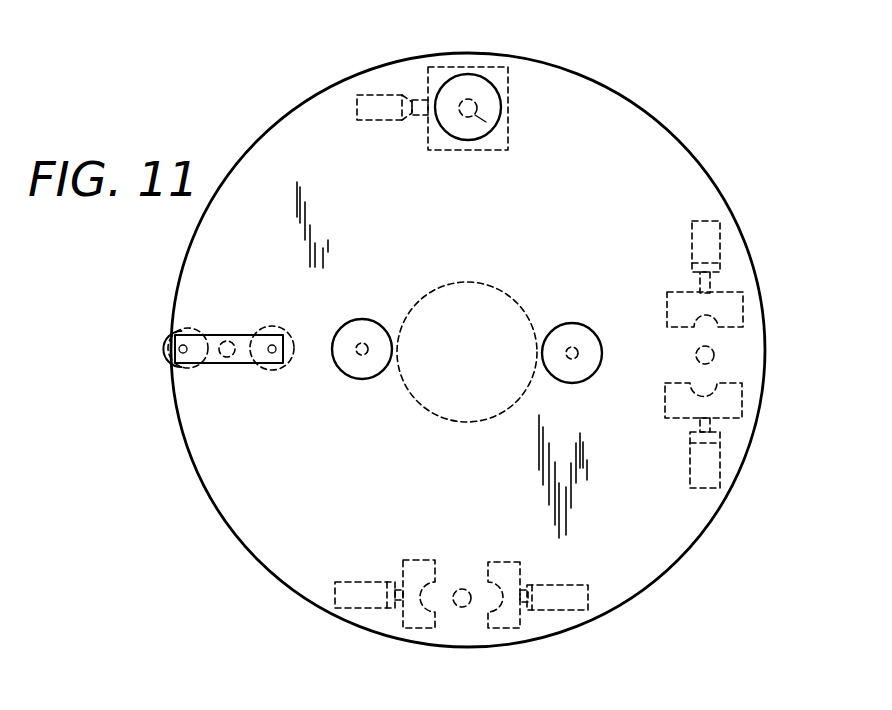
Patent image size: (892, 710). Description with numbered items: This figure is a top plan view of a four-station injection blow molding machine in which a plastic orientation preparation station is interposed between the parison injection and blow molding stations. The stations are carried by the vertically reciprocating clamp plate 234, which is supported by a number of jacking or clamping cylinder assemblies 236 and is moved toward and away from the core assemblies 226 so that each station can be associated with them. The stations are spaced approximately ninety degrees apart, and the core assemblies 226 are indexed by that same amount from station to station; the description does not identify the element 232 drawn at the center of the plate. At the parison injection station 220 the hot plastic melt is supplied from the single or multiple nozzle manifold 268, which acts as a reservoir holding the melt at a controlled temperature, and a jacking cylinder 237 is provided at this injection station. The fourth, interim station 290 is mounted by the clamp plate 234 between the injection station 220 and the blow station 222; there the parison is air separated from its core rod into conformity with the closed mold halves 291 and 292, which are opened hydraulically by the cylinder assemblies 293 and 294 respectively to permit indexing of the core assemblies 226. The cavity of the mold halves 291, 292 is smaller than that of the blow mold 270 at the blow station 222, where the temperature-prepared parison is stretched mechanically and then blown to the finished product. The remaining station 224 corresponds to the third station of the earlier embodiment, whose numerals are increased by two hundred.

The parison injection station 220 is at (442, 158).
The blow station 222 is at (531, 619).
The station 224 is at (266, 374).
The core assemblies 226 is at (510, 128).
The central hub opening 232 is at (528, 268).
The clamp plate 234 is at (692, 153).
The clamping cylinder assemblies 236 is at (388, 288).
The jacking cylinder 237 is at (482, 142).
The nozzle manifold 268 is at (380, 121).
The blow mold 270 is at (420, 636).
The fourth station 290 is at (735, 364).
The mold half 291 is at (722, 422).
The mold half 292 is at (728, 290).
The cylinder assembly 293 is at (687, 486).
The cylinder assembly 294 is at (722, 241).